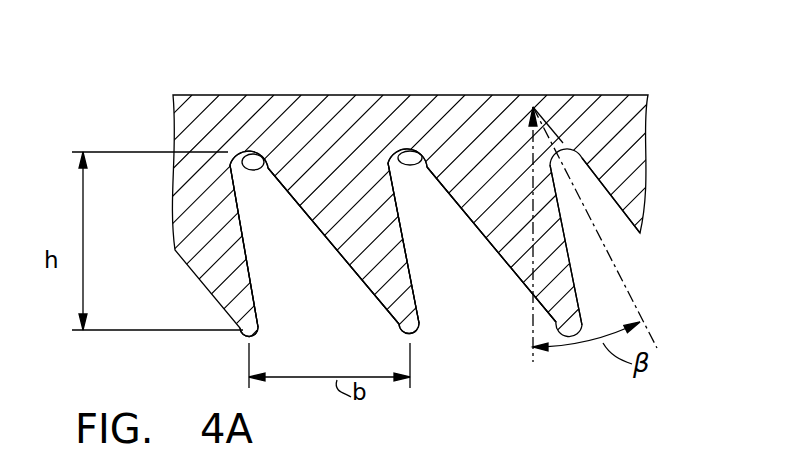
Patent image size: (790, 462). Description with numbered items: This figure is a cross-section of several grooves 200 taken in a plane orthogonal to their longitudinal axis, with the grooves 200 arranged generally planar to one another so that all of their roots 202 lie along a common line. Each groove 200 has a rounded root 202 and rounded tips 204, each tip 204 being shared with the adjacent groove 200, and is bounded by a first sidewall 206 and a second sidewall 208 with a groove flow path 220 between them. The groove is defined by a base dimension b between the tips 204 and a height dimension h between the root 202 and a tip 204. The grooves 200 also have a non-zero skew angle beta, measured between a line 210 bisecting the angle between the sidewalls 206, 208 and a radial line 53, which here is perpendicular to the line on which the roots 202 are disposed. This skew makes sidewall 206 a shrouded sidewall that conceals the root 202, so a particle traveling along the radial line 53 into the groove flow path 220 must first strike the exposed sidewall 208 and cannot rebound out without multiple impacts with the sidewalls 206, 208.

The groove 200 is at (150, 73).
The root 202 is at (273, 152).
The tip 204 is at (247, 334).
The first sidewall 206 is at (252, 285).
The second sidewall 208 is at (385, 308).
The groove flow path 220 is at (307, 244).
The radial line 53 is at (531, 318).
The line bisecting the angle between the sidewalls 210 is at (641, 313).